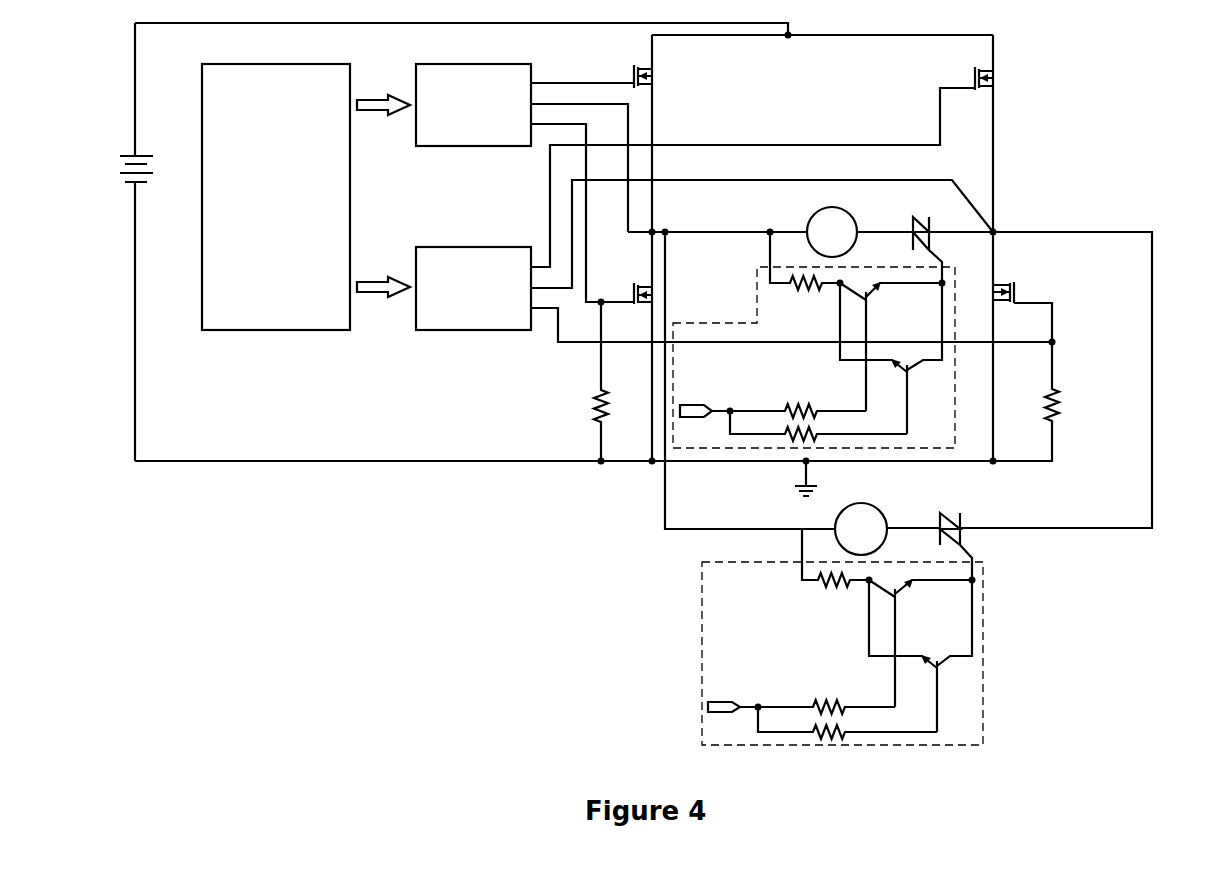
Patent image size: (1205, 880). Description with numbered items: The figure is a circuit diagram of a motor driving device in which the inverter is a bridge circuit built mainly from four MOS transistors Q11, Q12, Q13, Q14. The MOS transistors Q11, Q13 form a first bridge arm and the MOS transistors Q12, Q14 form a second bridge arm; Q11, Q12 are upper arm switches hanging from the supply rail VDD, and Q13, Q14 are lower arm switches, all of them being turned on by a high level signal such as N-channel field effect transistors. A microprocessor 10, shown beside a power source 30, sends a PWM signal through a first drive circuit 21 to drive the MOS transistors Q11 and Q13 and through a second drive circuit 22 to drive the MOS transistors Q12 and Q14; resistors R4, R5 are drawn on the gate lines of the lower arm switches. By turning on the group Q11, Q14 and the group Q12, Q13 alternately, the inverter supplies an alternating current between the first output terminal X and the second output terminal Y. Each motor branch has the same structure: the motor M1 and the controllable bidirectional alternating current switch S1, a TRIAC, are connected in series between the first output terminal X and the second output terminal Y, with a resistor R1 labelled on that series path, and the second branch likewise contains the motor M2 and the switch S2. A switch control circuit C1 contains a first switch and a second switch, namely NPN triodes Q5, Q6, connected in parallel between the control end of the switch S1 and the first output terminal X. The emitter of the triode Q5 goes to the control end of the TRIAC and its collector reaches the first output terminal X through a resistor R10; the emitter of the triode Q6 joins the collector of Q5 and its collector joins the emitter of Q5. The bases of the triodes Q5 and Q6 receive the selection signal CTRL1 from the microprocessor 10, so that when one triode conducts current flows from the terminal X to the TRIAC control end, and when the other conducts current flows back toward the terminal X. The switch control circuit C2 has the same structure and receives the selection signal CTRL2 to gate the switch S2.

The microprocessor 10 is at (220, 63).
The first drive circuit 21 is at (515, 63).
The second drive circuit 22 is at (450, 247).
The battery / power source 30 is at (128, 156).
The MOS transistor Q11 is at (670, 79).
The MOS transistor Q12 is at (1010, 81).
The MOS transistor Q13 is at (623, 279).
The MOS transistor Q14 is at (1030, 288).
The supply voltage node VDD is at (787, 59).
The first output terminal X is at (668, 218).
The second output terminal Y is at (1002, 246).
The motor M1 is at (832, 232).
The motor M2 is at (861, 529).
The resistor R1 is at (882, 217).
The controllable bidirectional alternating current switch S1 is at (940, 246).
The controllable bidirectional alternating current switch S2 is at (967, 543).
The pull-down resistor R4 is at (578, 383).
The pull-down resistor R5 is at (1045, 401).
The resistor R10 is at (820, 425).
The triode Q5 is at (908, 494).
The triode Q6 is at (909, 507).
The switch control circuit C1 is at (757, 293).
The switch control circuit C2 is at (985, 633).
The selection signal CTRL1 is at (792, 410).
The selection signal CTRL2 is at (822, 706).